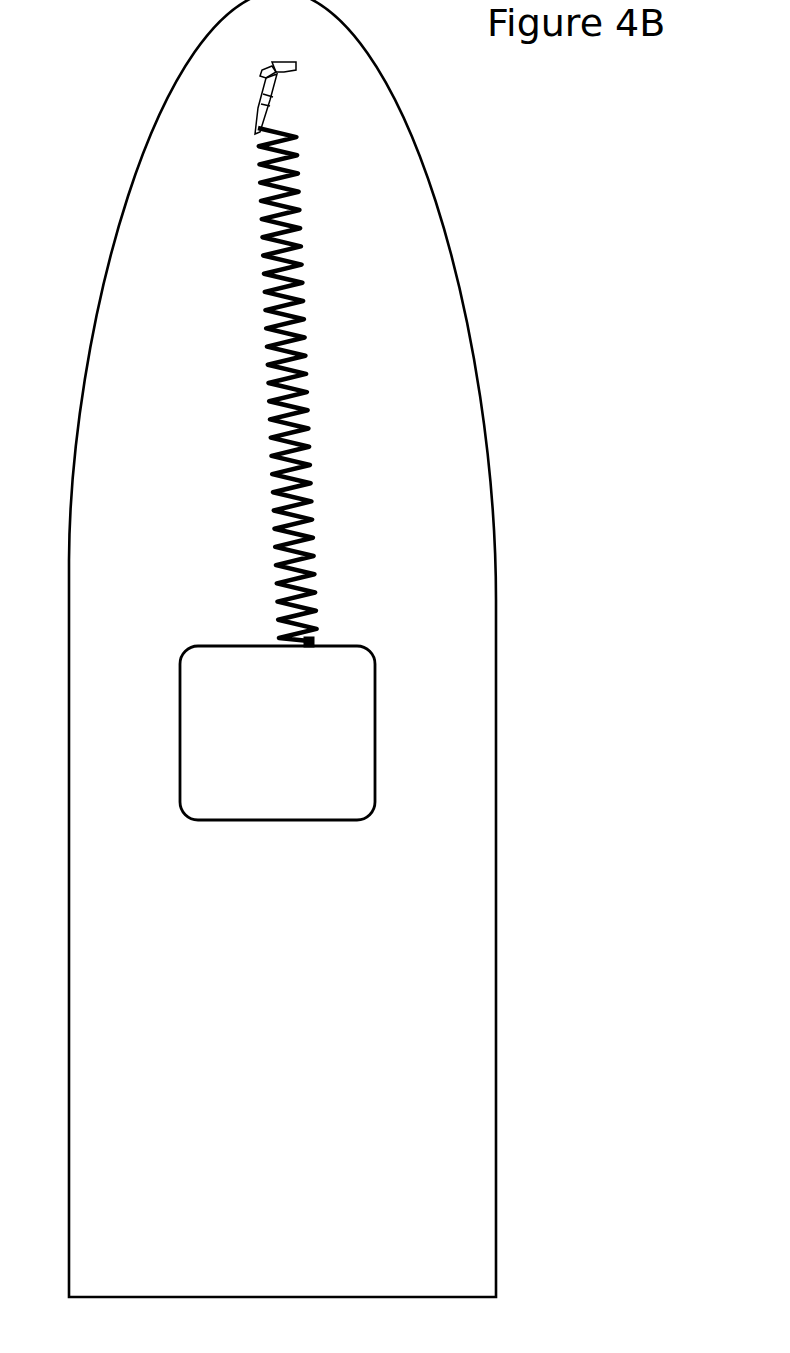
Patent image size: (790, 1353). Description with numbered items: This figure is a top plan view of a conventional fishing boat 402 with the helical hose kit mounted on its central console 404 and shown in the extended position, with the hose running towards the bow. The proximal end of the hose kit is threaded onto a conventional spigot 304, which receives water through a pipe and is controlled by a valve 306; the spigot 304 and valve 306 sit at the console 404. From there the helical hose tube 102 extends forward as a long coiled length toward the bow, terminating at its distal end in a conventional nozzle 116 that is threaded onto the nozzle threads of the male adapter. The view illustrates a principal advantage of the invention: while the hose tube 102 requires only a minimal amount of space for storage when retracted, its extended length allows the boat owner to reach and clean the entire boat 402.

The nozzle 116 is at (277, 80).
The hose tube 102 is at (279, 534).
The spigot 304 is at (316, 640).
The valve 306 is at (308, 648).
The central console 404 is at (343, 767).
The fishing boat 402 is at (70, 1033).